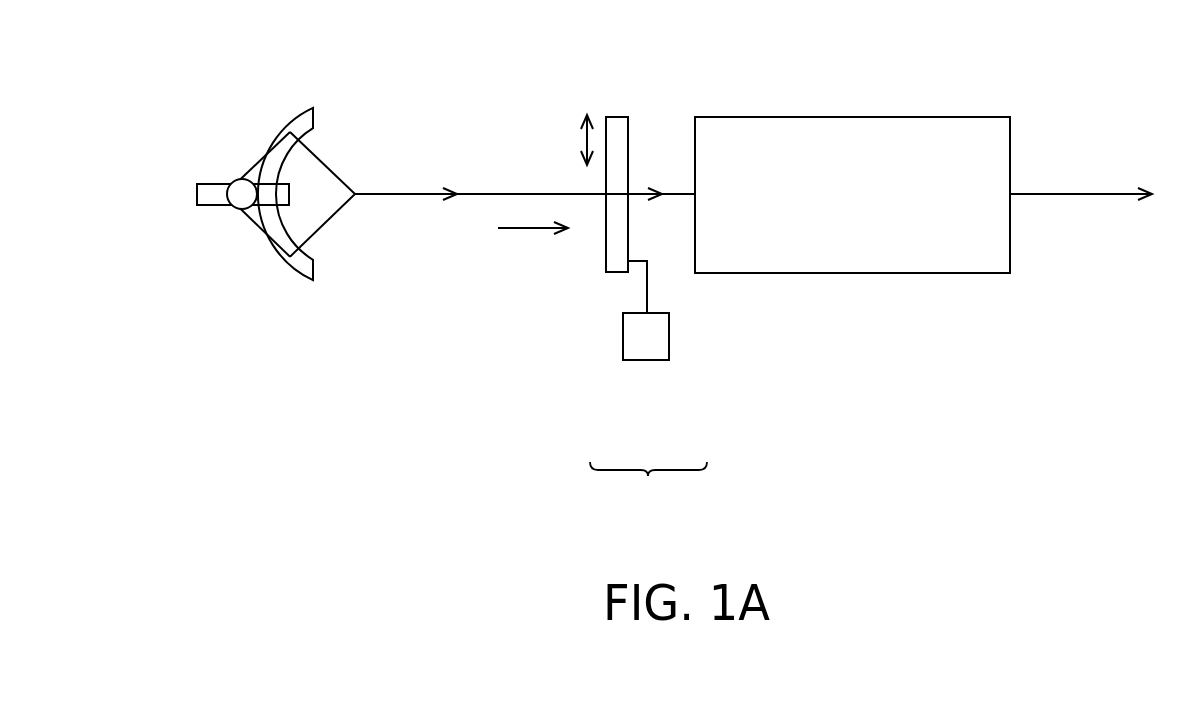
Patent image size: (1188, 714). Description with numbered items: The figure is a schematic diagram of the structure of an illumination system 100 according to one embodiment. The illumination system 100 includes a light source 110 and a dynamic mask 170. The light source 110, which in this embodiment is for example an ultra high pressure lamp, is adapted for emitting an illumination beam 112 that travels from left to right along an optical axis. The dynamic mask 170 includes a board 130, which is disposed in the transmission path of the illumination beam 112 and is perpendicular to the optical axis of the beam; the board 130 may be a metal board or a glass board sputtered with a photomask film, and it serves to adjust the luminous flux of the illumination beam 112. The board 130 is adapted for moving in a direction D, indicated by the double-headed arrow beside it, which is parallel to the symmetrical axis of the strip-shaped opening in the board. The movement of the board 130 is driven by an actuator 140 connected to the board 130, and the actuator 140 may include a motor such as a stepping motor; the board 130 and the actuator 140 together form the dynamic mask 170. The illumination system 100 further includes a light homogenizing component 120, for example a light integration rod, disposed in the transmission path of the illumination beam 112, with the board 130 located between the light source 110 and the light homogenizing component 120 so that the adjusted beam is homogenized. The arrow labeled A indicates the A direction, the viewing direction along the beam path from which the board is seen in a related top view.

The illumination system 100 is at (1157, 393).
The light source 110 is at (252, 130).
The illumination beam 112 is at (408, 193).
The light homogenizing component 120 is at (880, 137).
The board 130 is at (613, 263).
The actuator 140 is at (658, 350).
The dynamic mask 170 is at (648, 489).
The direction D is at (583, 137).
The A direction A is at (532, 230).